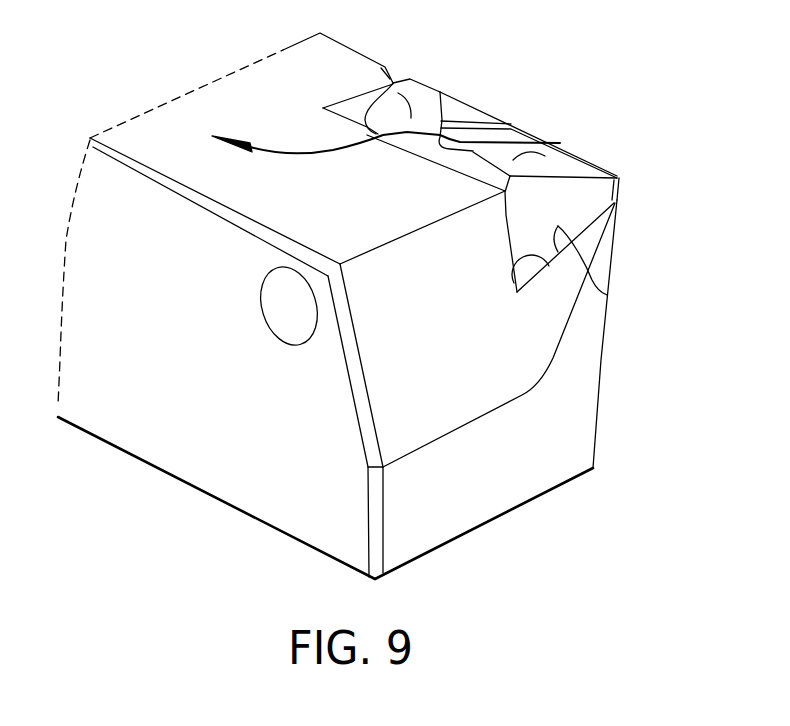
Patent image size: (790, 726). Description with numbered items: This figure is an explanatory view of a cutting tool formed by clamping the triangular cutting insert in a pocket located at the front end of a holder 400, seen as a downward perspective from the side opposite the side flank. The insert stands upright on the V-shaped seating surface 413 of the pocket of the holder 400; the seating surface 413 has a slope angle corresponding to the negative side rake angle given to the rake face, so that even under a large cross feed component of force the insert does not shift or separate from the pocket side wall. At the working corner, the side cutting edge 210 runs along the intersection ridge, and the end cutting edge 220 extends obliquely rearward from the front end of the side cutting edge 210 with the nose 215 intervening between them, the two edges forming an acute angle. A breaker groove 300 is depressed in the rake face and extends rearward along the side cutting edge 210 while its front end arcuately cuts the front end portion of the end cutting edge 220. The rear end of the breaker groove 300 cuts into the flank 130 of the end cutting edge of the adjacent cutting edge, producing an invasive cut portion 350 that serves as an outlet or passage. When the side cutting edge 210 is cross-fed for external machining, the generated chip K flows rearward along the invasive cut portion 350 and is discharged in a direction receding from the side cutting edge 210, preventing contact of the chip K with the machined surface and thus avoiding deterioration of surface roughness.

The holder 400 is at (184, 120).
The flank 130 is at (378, 90).
The invasive cut portion 350 is at (445, 96).
The breaker groove 300 is at (578, 167).
The side cutting edge 210 is at (597, 170).
The nose 215 is at (619, 178).
The end cutting edge 220 is at (617, 200).
The seating surface 413 is at (607, 295).
The chip K is at (333, 151).